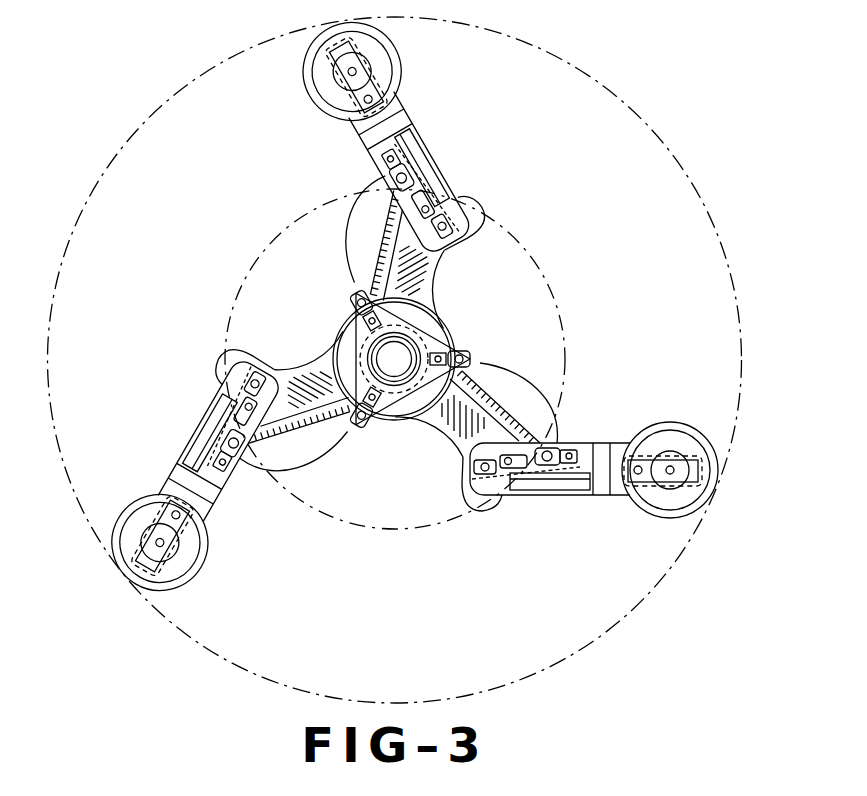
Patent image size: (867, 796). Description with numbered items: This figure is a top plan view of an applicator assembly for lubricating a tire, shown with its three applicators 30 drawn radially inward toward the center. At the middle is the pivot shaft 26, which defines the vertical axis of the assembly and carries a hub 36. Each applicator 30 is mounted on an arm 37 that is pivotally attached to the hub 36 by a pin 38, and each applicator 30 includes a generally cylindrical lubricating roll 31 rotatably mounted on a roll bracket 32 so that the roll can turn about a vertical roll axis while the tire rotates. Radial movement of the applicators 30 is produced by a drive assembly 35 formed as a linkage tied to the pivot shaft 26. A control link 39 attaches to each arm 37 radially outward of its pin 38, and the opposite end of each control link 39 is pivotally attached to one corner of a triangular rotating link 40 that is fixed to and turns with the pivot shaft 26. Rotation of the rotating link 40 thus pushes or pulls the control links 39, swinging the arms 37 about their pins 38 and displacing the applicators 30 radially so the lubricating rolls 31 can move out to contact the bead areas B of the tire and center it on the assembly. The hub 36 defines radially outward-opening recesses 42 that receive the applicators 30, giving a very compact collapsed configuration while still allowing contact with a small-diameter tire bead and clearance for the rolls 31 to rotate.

The bead area B is at (81, 216).
The pivot shaft 26 is at (378, 349).
The applicator 30 is at (322, 108).
The lubricating roll 31 is at (403, 58).
The roll bracket 32 is at (346, 64).
The drive assembly 35 is at (276, 281).
The hub 36 is at (357, 222).
The arm 37 is at (428, 153).
The pin 38 is at (468, 208).
The control link 39 is at (383, 242).
The rotating link 40 is at (433, 339).
The recess 42 is at (435, 266).